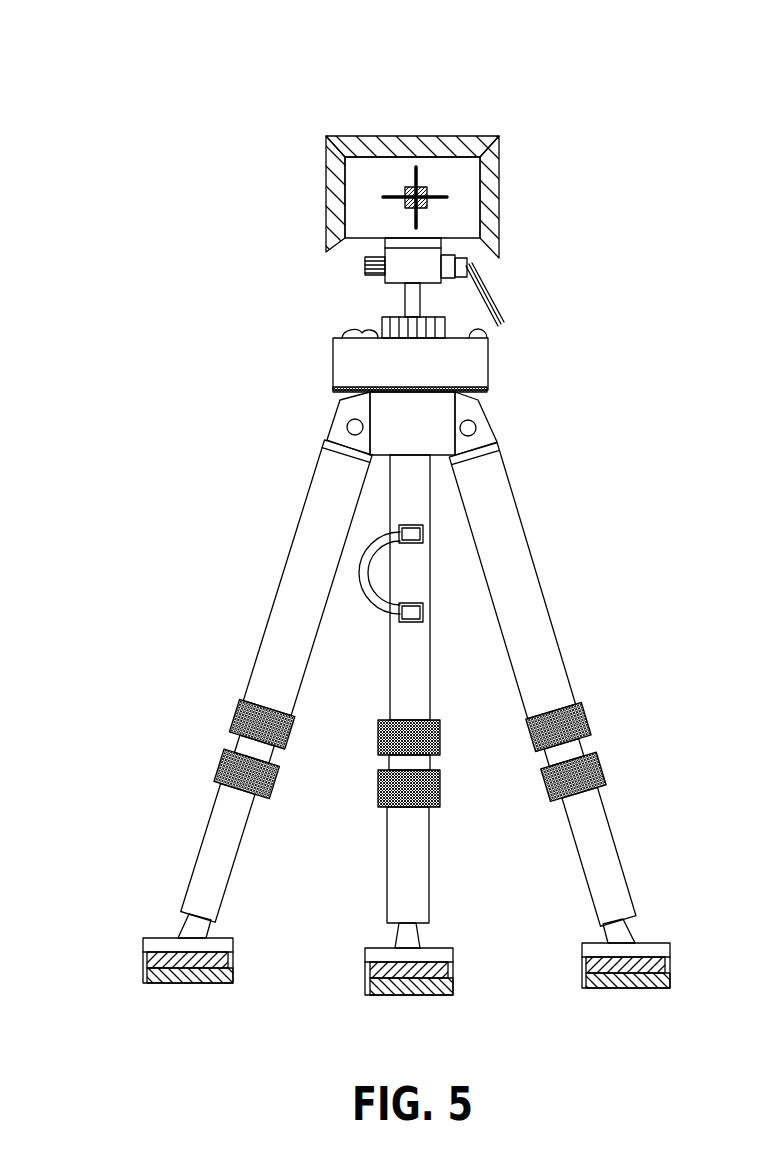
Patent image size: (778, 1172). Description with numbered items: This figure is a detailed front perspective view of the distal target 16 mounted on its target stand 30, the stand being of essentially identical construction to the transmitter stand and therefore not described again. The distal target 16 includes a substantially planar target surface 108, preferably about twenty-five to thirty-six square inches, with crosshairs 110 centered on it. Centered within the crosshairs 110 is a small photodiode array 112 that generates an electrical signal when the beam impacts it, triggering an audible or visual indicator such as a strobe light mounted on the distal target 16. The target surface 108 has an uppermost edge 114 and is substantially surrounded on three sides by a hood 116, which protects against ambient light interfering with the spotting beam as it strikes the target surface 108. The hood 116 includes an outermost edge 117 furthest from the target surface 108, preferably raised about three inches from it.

The distal target 16 is at (268, 118).
The target stand 30 is at (209, 580).
The target surface 108 is at (452, 182).
The crosshairs 110 is at (388, 191).
The photodiode array 112 is at (426, 206).
The uppermost edge 114 is at (406, 157).
The hood 116 is at (473, 148).
The outermost edge 117 is at (327, 247).